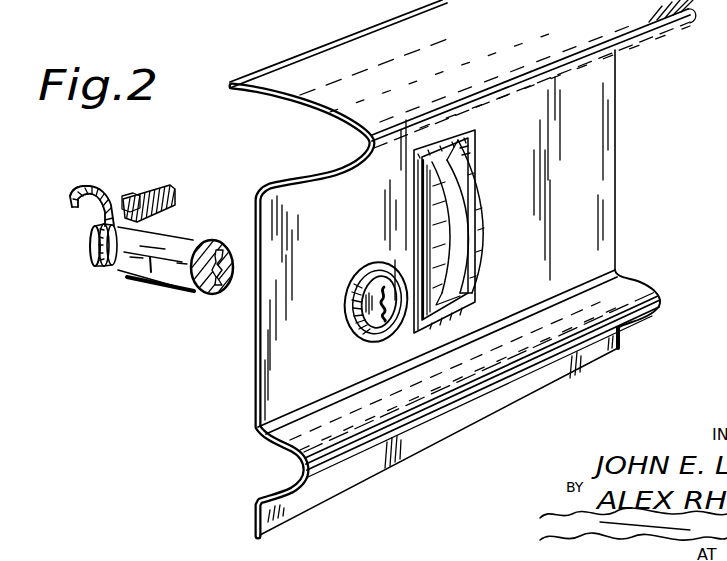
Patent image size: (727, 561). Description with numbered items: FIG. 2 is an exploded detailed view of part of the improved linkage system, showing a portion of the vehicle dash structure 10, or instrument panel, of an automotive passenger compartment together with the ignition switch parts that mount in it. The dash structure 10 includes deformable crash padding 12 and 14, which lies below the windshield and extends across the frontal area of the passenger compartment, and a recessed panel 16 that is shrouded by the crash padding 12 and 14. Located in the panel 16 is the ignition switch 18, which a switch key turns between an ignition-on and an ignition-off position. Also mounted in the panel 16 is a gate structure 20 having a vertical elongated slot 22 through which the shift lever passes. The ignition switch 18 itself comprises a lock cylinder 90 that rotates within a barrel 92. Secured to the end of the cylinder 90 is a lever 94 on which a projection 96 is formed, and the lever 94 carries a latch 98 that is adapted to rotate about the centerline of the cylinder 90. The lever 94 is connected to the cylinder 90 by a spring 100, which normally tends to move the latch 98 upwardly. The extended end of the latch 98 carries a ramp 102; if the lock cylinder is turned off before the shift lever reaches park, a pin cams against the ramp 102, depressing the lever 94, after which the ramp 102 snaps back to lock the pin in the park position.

The vehicle dash structure 10 is at (598, 130).
The crash padding 12 is at (658, 30).
The crash padding 14 is at (294, 462).
The recessed panel 16 is at (257, 378).
The ignition switch 18 is at (351, 336).
The gate structure 20 is at (477, 192).
The vertical elongated slot 22 is at (469, 215).
The lock cylinder 90 is at (362, 303).
The barrel 92 is at (348, 285).
The lever 94 is at (92, 236).
The projection 96 is at (116, 203).
The latch 98 is at (96, 208).
The spring 100 is at (93, 262).
The ramp 102 is at (88, 186).